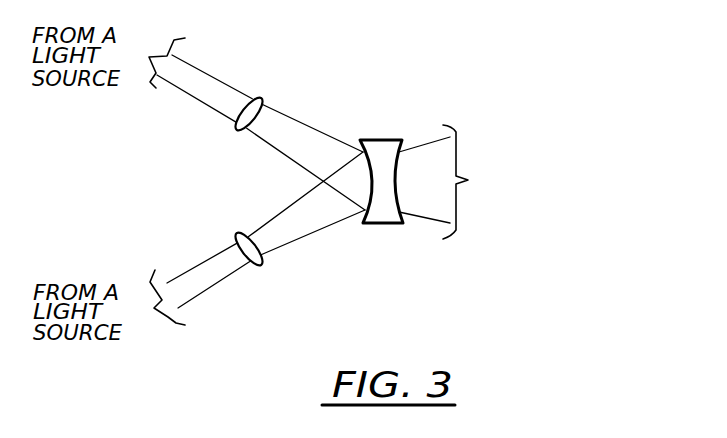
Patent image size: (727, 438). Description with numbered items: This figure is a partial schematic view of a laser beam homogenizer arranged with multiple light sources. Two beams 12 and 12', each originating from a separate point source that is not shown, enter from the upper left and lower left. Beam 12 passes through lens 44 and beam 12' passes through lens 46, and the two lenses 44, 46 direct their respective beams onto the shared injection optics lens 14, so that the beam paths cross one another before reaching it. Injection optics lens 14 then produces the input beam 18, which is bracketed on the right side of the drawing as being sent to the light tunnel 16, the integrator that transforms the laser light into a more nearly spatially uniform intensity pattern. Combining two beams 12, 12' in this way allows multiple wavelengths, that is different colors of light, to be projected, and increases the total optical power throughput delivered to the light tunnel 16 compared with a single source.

The incoming light beam 12 is at (261, 120).
The second light beam 12' is at (266, 239).
The lens 44 is at (263, 101).
The lens 46 is at (264, 271).
The injection optics lens 14 is at (380, 221).
The input beam 18 is at (422, 153).
The light tunnel 16 is at (571, 182).